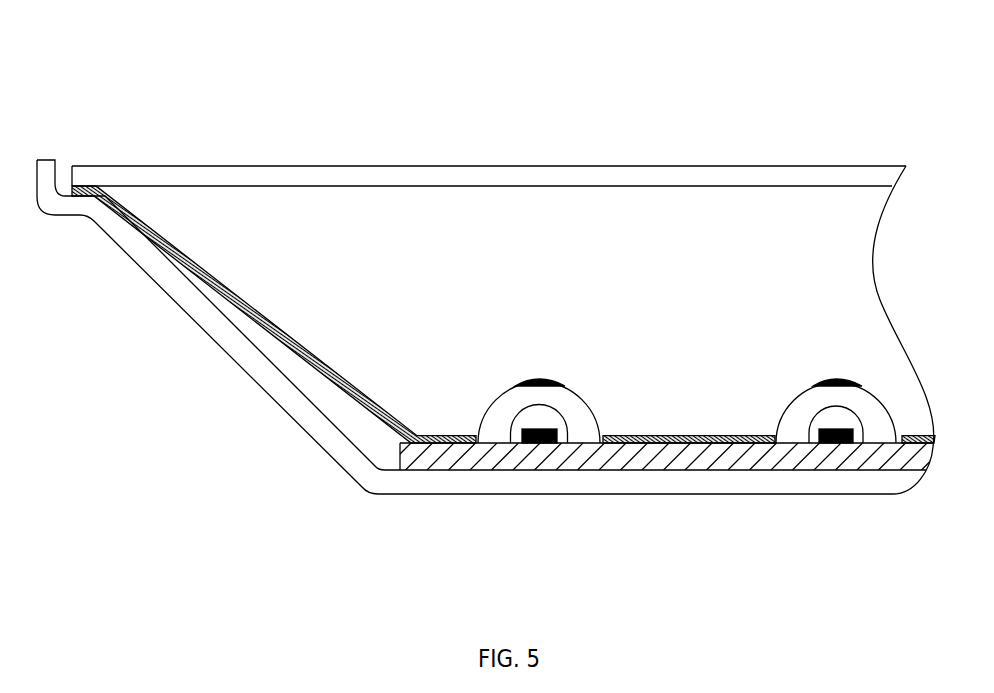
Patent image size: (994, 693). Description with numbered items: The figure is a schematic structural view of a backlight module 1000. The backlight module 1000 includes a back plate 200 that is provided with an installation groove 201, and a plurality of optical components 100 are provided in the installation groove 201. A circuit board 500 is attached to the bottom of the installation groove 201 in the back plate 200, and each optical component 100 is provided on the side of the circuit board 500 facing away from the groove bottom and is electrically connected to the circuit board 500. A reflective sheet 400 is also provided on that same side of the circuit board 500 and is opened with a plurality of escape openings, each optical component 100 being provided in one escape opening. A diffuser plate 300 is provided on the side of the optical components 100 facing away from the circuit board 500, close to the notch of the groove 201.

The backlight module 1000 is at (568, 50).
The optical component 100 is at (539, 405).
The back plate 200 is at (207, 318).
The installation groove 201 is at (65, 172).
The diffuser plate 300 is at (527, 172).
The reflective sheet 400 is at (292, 346).
The circuit board 500 is at (425, 445).